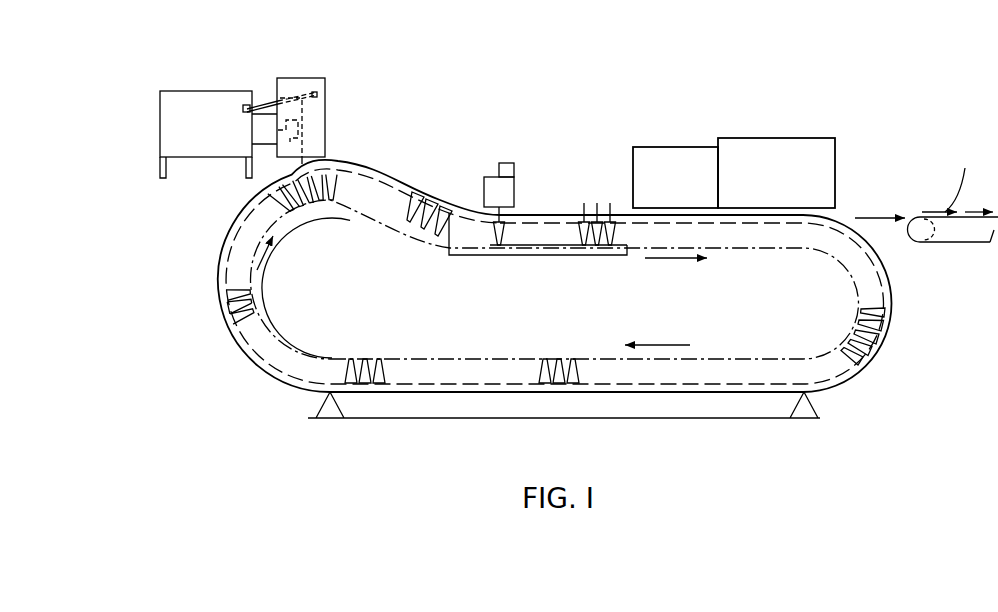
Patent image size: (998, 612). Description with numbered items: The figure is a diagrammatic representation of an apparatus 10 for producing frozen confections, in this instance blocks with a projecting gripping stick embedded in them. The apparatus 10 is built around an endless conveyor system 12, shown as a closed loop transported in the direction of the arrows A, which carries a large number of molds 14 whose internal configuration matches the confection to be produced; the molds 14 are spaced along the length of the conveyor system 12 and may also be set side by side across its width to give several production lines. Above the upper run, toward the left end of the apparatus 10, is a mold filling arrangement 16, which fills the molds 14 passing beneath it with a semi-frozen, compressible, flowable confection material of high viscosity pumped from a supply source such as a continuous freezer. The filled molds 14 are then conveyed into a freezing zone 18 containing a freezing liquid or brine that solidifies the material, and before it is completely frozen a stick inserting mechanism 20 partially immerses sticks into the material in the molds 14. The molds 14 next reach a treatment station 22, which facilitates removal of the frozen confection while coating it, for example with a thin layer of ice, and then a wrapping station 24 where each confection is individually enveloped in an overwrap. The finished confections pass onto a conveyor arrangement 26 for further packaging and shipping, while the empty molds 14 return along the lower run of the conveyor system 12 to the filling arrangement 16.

The apparatus 10 is at (557, 140).
The endless conveyor system 12 is at (453, 372).
The molds 14 is at (340, 188).
The mold filling arrangement 16 is at (240, 79).
The freezing zone 18 is at (548, 257).
The stick inserting mechanism 20 is at (483, 192).
The treatment station 22 is at (673, 147).
The wrapping station 24 is at (835, 162).
The conveyor arrangement 26 is at (969, 245).